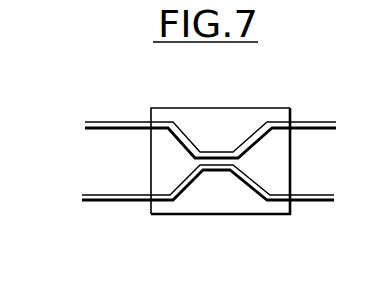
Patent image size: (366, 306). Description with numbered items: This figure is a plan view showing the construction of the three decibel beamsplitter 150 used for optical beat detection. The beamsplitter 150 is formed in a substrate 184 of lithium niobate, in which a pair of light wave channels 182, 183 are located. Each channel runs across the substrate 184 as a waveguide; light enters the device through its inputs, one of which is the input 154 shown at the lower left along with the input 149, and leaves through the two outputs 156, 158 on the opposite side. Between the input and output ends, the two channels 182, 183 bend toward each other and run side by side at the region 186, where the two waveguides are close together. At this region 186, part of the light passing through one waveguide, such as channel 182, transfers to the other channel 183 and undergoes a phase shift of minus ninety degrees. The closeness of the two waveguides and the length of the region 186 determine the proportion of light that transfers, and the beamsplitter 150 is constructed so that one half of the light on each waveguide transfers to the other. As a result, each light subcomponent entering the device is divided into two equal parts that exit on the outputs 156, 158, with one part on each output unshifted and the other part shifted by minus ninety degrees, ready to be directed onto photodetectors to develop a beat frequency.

The first input waveguide 149 is at (107, 130).
The beamsplitter 150 is at (180, 113).
The light wave channel 182 is at (257, 143).
The output 156 is at (305, 126).
The substrate 184 is at (292, 160).
The input 154 is at (123, 200).
The region 186 is at (213, 180).
The light wave channel 183 is at (260, 196).
The output 158 is at (313, 204).